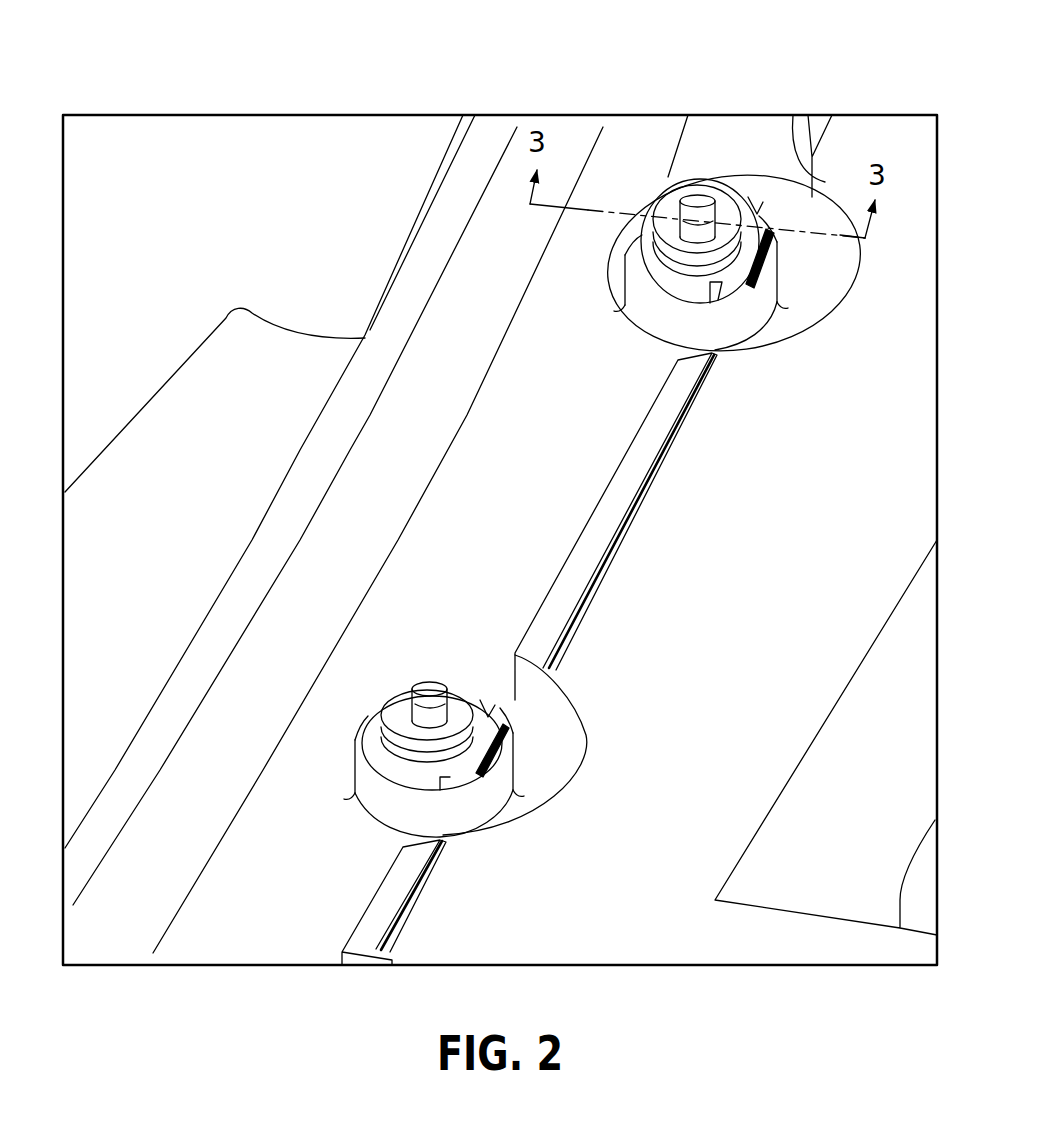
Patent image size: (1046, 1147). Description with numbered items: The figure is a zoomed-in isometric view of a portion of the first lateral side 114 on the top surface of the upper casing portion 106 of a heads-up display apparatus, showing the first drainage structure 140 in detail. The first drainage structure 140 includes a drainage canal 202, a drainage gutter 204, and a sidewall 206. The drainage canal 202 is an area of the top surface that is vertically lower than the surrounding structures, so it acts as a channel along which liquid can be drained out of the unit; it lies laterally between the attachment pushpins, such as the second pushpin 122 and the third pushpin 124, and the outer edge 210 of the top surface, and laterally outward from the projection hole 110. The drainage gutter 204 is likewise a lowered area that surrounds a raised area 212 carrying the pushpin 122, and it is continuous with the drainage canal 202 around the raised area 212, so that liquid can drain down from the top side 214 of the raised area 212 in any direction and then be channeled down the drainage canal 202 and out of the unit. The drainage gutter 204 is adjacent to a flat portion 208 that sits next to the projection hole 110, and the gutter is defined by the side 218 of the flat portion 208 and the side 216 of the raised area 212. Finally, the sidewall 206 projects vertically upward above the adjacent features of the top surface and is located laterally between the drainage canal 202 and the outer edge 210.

The upper casing portion 106 is at (494, 111).
The projection hole 110 is at (895, 790).
The first lateral side 114 is at (313, 213).
The second pushpin 122 is at (699, 204).
The third pushpin 124 is at (430, 688).
The first drainage structure 140 is at (253, 933).
The drainage canal 202 is at (540, 488).
The drainage gutter 204 is at (804, 266).
The sidewall 206 is at (461, 305).
The flat portion 208 is at (780, 560).
The outer edge 210 is at (362, 314).
The raised area 212 is at (710, 320).
The top side 214 is at (666, 290).
The side of raised area 216 is at (750, 313).
The side of flat portion 218 is at (819, 113).